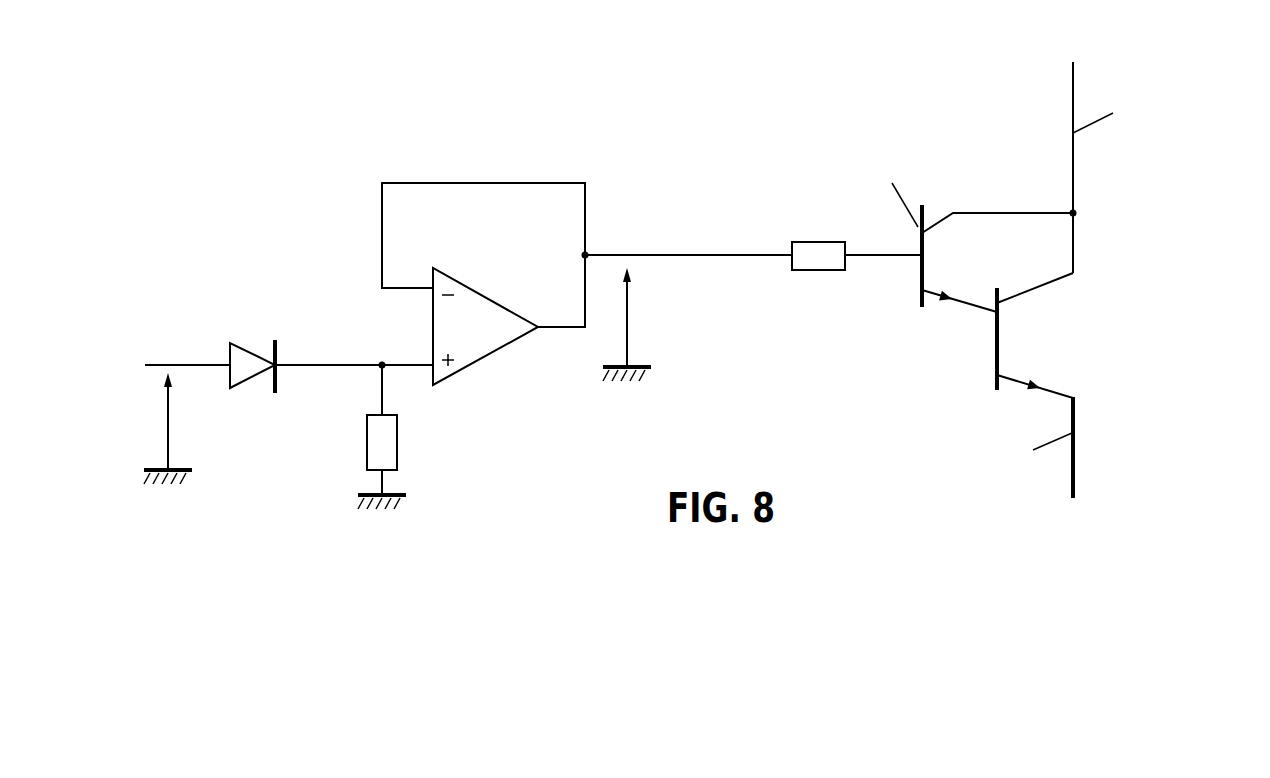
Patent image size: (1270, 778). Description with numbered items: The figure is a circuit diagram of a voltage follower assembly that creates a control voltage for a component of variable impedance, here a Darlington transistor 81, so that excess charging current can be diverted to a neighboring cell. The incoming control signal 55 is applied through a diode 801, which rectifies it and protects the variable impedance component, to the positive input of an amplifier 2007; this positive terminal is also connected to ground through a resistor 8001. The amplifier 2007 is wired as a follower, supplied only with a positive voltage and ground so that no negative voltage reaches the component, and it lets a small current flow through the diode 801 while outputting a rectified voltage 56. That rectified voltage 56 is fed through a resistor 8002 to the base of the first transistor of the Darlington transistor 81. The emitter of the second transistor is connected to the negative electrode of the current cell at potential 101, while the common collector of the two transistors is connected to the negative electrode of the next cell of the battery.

The diode 801 is at (245, 325).
The control signal 55 is at (202, 440).
The resistor 8001 is at (397, 455).
The amplifier 2007 is at (485, 357).
The rectified voltage 56 is at (660, 333).
The resistor 8002 is at (807, 240).
The Darlington transistor 81 is at (1088, 300).
The potential of the negative electrode 101 is at (1105, 487).